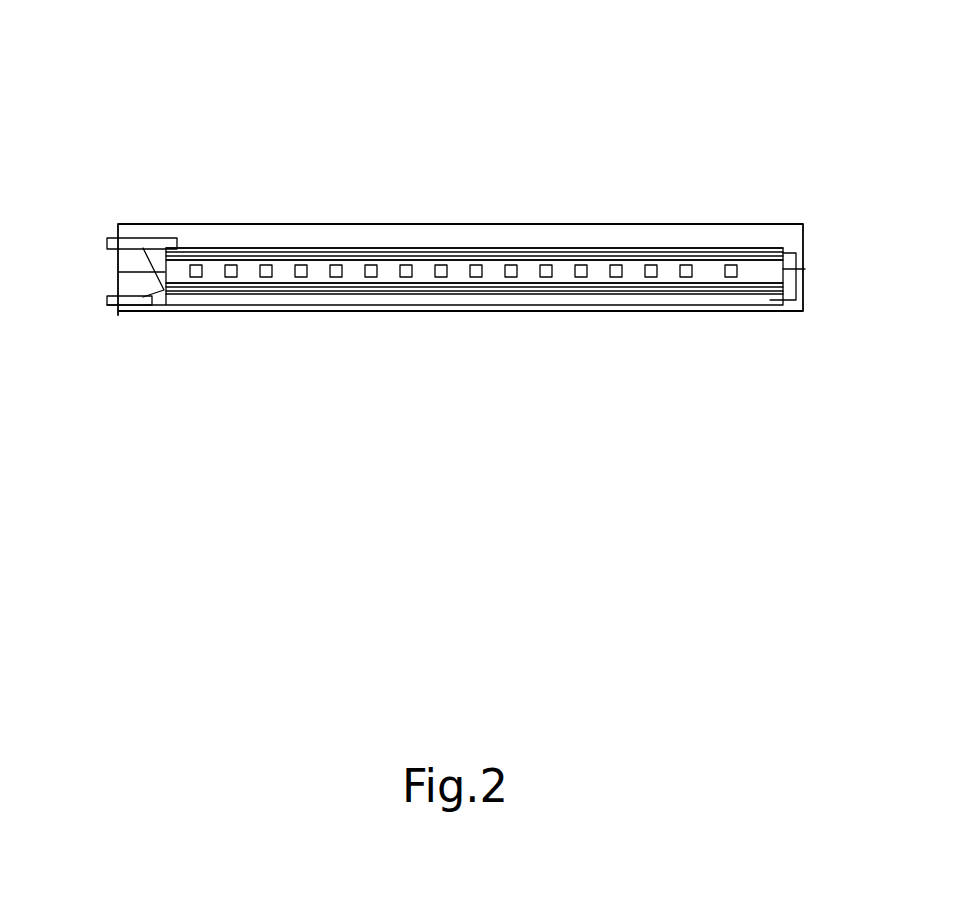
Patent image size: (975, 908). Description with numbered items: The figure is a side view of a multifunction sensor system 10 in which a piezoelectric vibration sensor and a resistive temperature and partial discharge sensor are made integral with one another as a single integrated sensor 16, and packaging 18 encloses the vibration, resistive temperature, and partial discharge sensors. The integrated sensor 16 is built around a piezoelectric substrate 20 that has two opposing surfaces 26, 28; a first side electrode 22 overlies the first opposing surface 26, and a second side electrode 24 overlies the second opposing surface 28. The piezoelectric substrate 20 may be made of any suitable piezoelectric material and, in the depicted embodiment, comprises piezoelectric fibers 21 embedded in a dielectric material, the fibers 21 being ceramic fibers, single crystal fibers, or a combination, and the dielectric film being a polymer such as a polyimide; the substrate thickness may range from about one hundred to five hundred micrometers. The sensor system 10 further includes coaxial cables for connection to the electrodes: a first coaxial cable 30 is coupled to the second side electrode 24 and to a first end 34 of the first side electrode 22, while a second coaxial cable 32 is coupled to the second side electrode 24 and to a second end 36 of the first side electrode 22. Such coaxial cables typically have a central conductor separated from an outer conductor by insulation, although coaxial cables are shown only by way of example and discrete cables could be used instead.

The sensor system 10 is at (127, 118).
The integrated sensor 16 is at (818, 310).
The packaging 18 is at (727, 224).
The piezoelectric substrate 20 is at (525, 268).
The piezoelectric fibers 21 is at (405, 260).
The first side electrode 22 is at (305, 250).
The second side electrode 24 is at (390, 290).
The first opposing surface 26 is at (595, 250).
The second opposing surface 28 is at (630, 276).
The first coaxial cable 30 is at (106, 236).
The second coaxial cable 32 is at (104, 300).
The first end 34 is at (177, 253).
The second end 36 is at (780, 242).